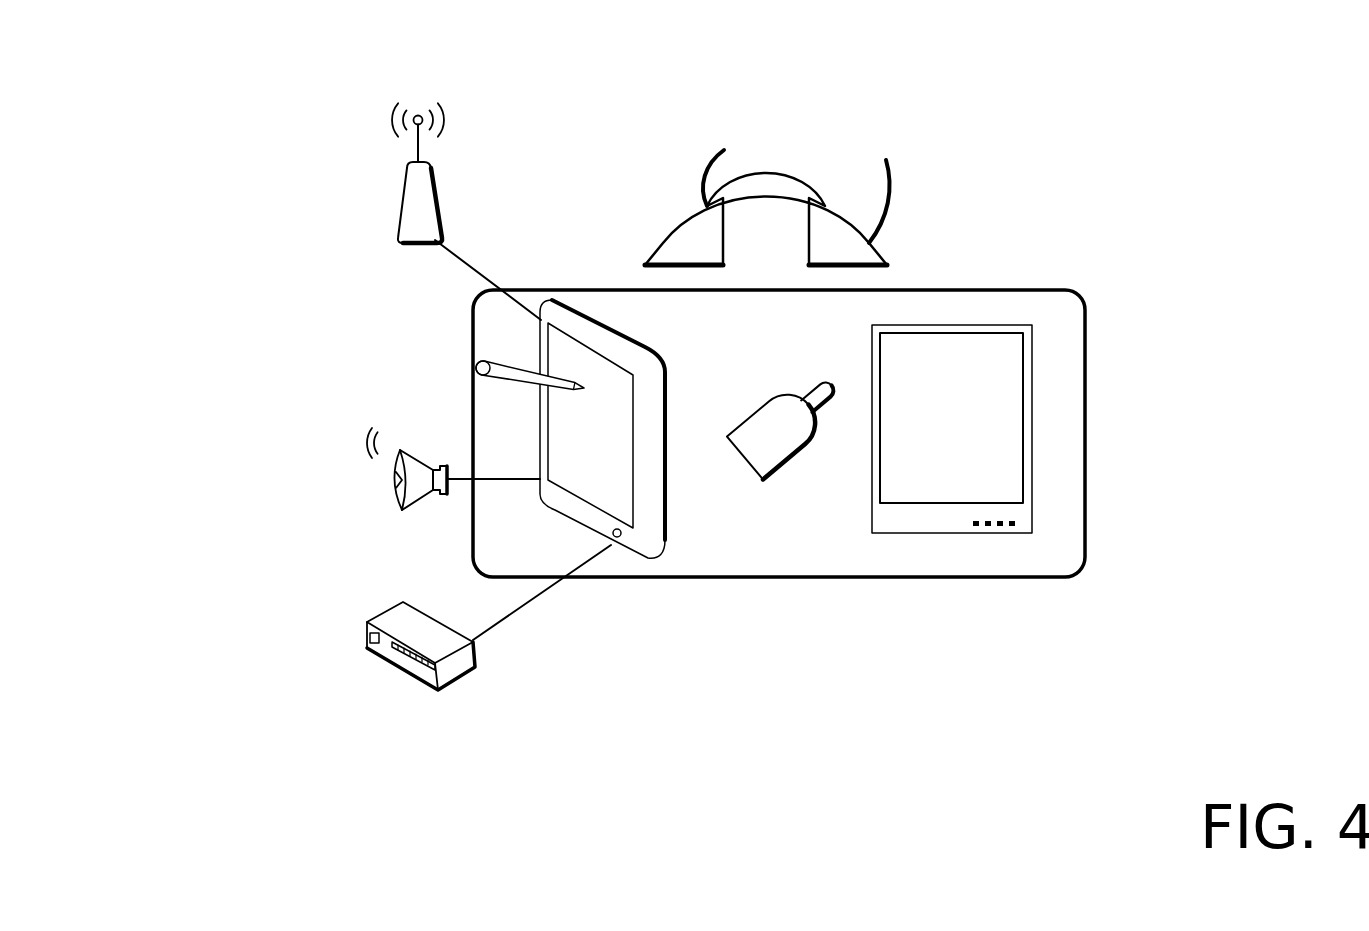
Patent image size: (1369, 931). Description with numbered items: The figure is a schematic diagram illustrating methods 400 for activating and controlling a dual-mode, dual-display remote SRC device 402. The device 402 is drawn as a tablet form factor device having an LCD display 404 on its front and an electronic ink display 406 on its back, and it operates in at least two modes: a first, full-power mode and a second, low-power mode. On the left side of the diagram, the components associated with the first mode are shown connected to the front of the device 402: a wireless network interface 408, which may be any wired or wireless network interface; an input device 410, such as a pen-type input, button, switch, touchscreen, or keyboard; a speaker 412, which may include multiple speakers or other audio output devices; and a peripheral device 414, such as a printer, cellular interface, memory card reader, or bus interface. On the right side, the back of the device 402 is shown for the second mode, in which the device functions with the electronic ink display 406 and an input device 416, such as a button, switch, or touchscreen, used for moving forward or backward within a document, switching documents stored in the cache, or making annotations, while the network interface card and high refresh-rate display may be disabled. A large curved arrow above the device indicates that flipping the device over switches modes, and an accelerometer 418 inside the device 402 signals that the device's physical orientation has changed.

The methods for activating and controlling a dual-mode, dual-display remote SRC devi 400 is at (1168, 103).
The dual-mode, dual-display remote SRC device 402 is at (779, 433).
The LCD display 404 is at (602, 429).
The electronic ink display 406 is at (952, 429).
The wireless network interface 408 is at (383, 230).
The input device 410 is at (466, 352).
The speaker 412 is at (380, 493).
The peripheral device 414 is at (355, 638).
The input device 416 is at (1014, 536).
The accelerometer 418 is at (764, 498).